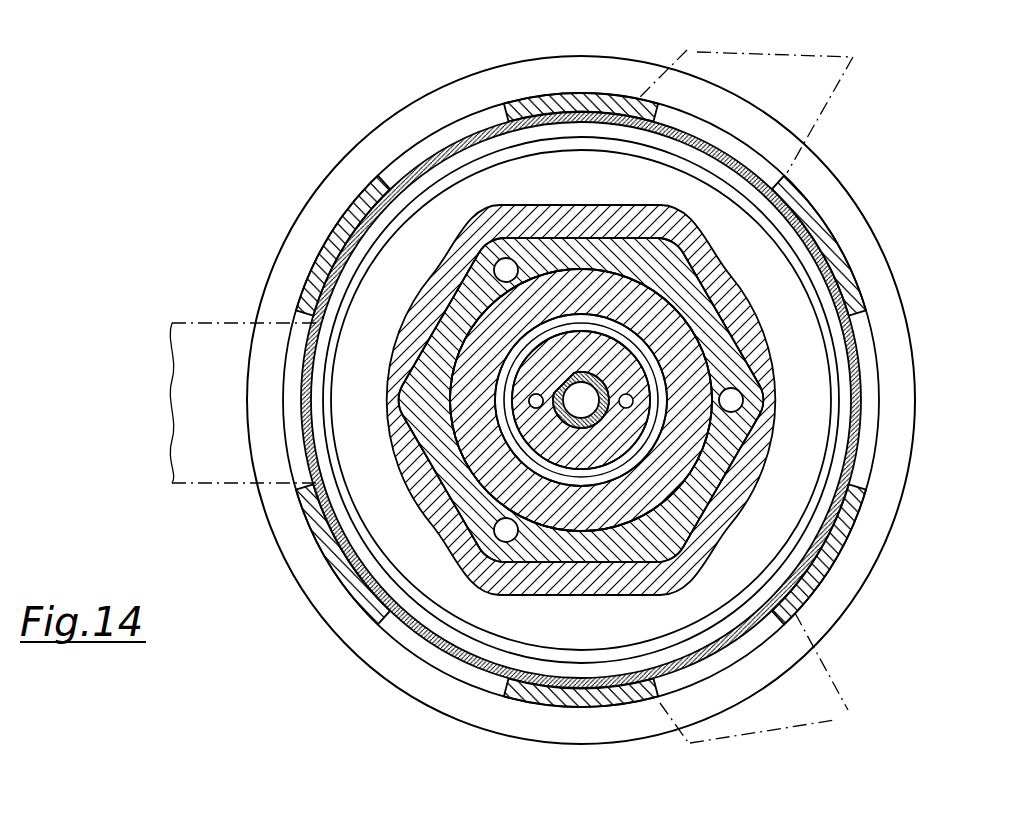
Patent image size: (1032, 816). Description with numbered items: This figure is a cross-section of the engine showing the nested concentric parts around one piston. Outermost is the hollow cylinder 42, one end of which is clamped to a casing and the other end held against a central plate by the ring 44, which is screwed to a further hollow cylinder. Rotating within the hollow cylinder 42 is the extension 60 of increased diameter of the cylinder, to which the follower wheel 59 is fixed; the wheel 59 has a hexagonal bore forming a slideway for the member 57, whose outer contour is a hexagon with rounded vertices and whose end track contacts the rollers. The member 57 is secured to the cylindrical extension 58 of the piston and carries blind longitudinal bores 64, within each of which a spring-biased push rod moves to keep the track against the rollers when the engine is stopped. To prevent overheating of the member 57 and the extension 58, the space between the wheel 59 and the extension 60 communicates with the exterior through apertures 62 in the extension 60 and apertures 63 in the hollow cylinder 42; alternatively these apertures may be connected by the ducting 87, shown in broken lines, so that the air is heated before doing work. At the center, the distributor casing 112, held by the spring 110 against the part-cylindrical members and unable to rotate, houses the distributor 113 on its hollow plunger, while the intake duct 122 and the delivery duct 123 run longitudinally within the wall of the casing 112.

The hollow cylinder 42 is at (863, 512).
The ring 44 is at (845, 573).
The member 57 is at (672, 525).
The cylindrical extension 58 is at (683, 423).
The follower wheel 59 is at (750, 448).
The extension 60 is at (822, 540).
The aperture 62 is at (753, 623).
The aperture 63 is at (712, 667).
The blind longitudinal bore 64 is at (743, 394).
The ducting 87 is at (812, 88).
The spring 110 is at (648, 328).
The distributor casing 112 is at (550, 437).
The distributor 113 is at (567, 373).
The intake duct 122 is at (716, 366).
The delivery duct 123 is at (530, 397).